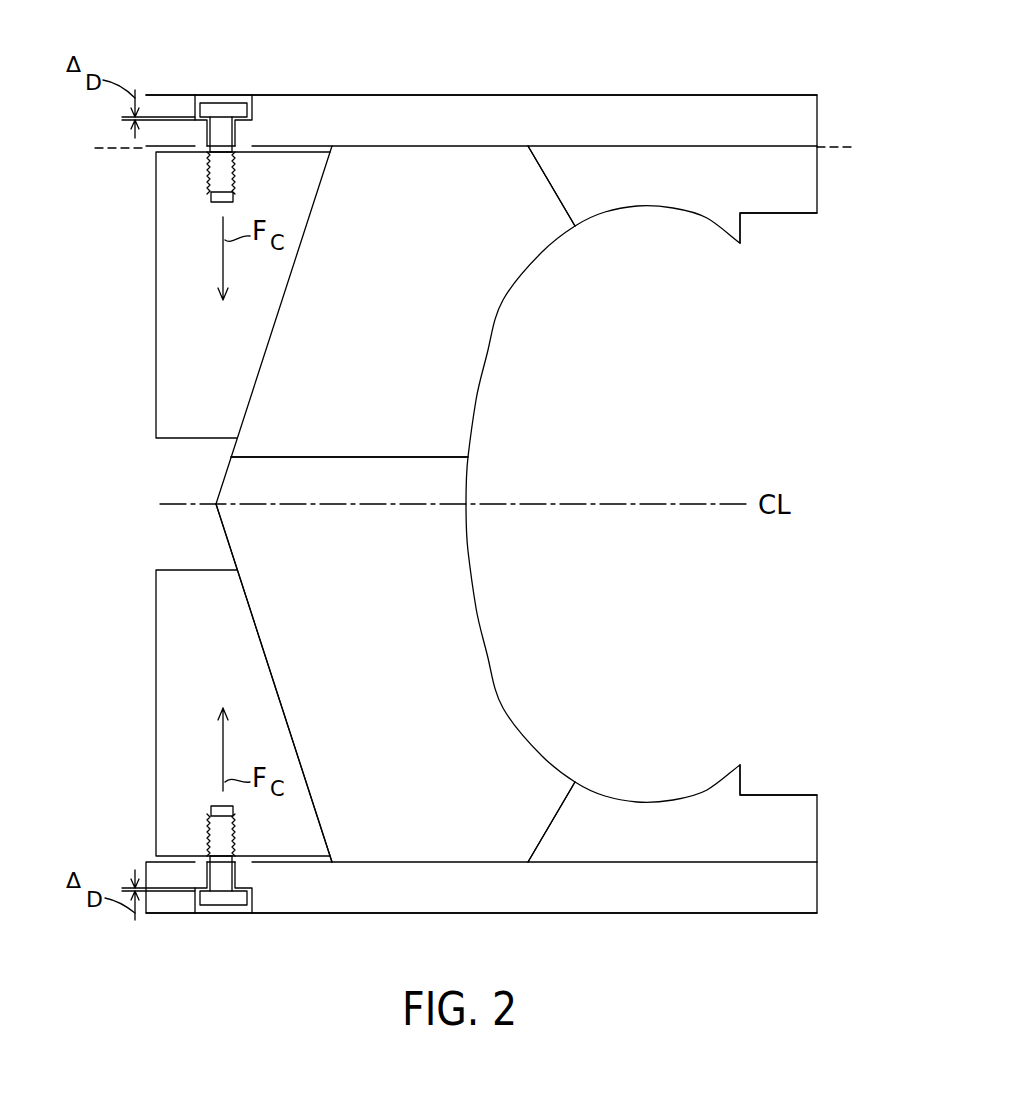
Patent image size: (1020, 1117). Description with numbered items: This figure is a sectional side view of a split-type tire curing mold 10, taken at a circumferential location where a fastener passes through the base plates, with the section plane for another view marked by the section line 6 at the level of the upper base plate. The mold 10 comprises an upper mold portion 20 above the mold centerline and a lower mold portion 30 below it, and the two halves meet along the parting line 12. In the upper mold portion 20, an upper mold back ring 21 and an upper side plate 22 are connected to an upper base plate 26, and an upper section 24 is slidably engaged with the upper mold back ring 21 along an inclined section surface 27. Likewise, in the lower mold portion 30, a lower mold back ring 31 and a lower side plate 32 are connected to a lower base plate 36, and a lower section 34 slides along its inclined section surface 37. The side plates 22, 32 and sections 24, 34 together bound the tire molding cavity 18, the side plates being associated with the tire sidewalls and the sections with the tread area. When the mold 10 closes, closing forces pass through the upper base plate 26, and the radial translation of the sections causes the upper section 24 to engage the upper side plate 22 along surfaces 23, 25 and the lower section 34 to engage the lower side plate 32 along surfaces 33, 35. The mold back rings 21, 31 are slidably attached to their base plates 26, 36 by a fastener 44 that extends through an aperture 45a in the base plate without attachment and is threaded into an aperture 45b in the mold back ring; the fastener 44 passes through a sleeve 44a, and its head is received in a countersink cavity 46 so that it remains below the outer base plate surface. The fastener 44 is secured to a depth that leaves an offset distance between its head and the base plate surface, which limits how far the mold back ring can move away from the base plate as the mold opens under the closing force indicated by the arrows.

The split-type tire curing mold 10 is at (676, 71).
The parting line 12 is at (388, 458).
The tire molding cavity 18 is at (468, 555).
The upper mold portion 20 is at (703, 272).
The upper mold back ring 21 is at (217, 390).
The upper side plate 22 is at (738, 192).
The engagement surface 23 is at (560, 205).
The upper section 24 is at (412, 355).
The engagement surface 25 is at (557, 188).
The upper base plate 26 is at (663, 137).
The section surface 27 is at (290, 283).
The lower mold portion 30 is at (615, 675).
The lower mold back ring 31 is at (220, 651).
The lower side plate 32 is at (731, 843).
The engagement surface 33 is at (558, 802).
The lower section 34 is at (409, 673).
The engagement surface 35 is at (555, 820).
The lower base plate 36 is at (668, 900).
The section surface 37 is at (298, 747).
The fastener 44 is at (227, 102).
The sleeve 44a is at (203, 135).
The aperture 45a is at (235, 138).
The aperture 45b is at (205, 193).
The cavity 46 is at (193, 103).
The section line 6- 6 is at (475, 147).